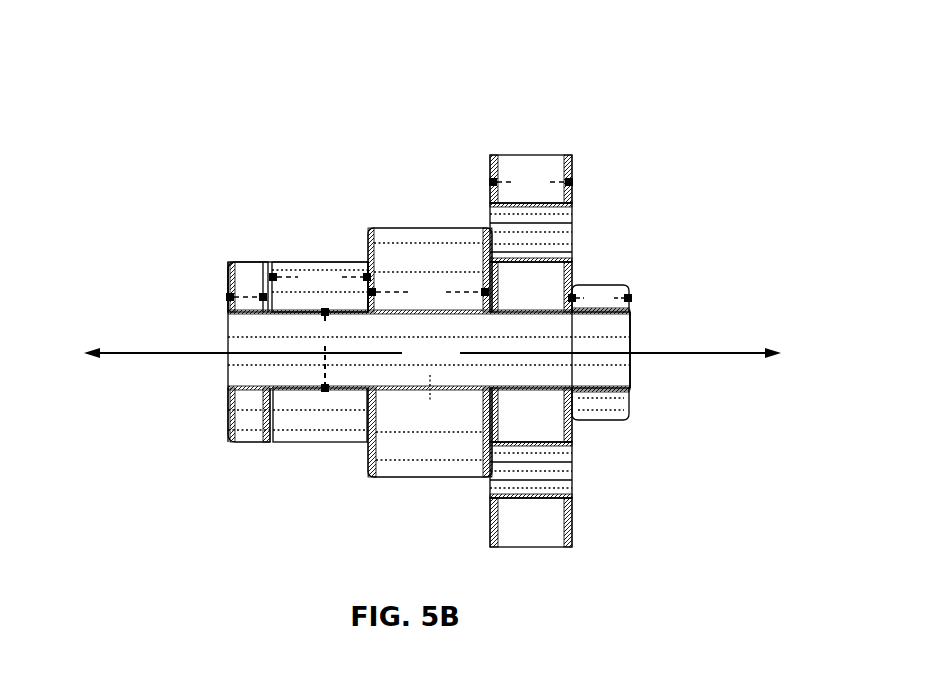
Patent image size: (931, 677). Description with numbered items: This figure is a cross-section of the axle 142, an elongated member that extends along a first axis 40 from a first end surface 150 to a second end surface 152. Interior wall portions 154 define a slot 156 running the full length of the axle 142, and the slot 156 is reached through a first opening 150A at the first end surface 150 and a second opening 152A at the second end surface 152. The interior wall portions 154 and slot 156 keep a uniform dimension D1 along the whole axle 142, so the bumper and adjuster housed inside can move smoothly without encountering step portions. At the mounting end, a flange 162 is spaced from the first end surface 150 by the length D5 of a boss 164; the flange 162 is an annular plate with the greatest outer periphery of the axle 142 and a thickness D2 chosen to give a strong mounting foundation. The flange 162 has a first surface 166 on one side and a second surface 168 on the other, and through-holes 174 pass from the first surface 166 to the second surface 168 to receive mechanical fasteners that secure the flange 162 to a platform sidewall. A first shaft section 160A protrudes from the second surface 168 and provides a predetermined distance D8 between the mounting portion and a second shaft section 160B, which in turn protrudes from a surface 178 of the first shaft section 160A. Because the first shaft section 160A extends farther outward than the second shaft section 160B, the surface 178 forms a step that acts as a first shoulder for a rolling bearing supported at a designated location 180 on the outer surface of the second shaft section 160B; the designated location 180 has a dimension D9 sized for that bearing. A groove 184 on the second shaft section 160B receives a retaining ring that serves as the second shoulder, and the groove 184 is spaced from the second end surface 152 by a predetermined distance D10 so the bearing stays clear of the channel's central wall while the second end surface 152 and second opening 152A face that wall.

The first axis 40 is at (730, 354).
The axle 142 is at (584, 88).
The first end surface 150 is at (628, 403).
The first opening 150A is at (630, 342).
The second end surface 152 is at (230, 272).
The second opening 152A is at (228, 368).
The interior wall portions 154 is at (430, 375).
The slot 156 is at (429, 350).
The first shaft section 160A is at (363, 168).
The second shaft section 160B is at (228, 168).
The flange 162 is at (527, 165).
The boss 164 is at (598, 405).
The first surface 166 is at (573, 173).
The second surface 168 is at (492, 533).
The through-holes 174 is at (572, 232).
The surface 178 is at (368, 467).
The designated location 180 is at (273, 253).
The groove 184 is at (267, 440).
The dimension of interior wall portions and slot D1 is at (324, 350).
The thickness of flange D2 is at (531, 183).
The length of boss D5 is at (600, 299).
The predetermined distance D8 is at (428, 293).
The dimension of designated location D9 is at (320, 278).
The predetermined distance D10 is at (247, 288).